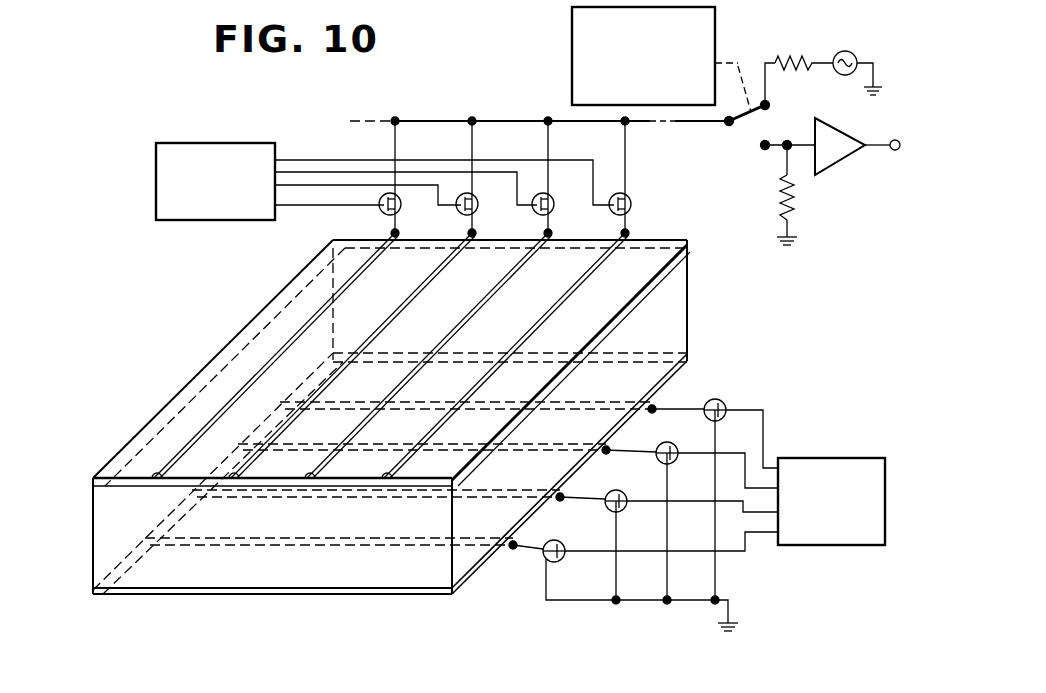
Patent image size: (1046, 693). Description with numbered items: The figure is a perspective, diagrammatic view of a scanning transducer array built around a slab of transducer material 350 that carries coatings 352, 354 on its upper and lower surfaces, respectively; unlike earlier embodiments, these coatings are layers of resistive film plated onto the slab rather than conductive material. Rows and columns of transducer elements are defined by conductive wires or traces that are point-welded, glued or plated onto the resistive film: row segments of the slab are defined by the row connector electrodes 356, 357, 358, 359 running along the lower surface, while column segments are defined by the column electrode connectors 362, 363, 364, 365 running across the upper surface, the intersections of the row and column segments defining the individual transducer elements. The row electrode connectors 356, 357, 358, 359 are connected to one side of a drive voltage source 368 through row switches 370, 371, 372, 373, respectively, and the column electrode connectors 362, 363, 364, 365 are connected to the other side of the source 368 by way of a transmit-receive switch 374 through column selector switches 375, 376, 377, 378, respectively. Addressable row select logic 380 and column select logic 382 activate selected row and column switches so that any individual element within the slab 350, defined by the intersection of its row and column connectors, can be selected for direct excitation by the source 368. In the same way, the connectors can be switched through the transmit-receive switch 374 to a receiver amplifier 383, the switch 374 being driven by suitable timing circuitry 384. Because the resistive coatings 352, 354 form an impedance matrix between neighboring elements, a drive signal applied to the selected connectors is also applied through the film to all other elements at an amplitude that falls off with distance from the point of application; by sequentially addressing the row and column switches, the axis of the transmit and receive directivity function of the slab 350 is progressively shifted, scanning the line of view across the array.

The slab of transducer material 350 is at (105, 528).
The coating 352 is at (93, 480).
The coating 354 is at (98, 592).
The row connector electrode 356 is at (512, 549).
The row connector electrode 357 is at (556, 500).
The row connector electrode 358 is at (603, 453).
The row connector electrode 359 is at (650, 413).
The column electrode connector 362 is at (366, 262).
The column electrode connector 363 is at (445, 262).
The column electrode connector 364 is at (526, 262).
The column electrode connector 365 is at (598, 262).
The drive voltage source 368 is at (848, 51).
The row switch 370 is at (552, 562).
The row switch 371 is at (624, 509).
The row switch 372 is at (663, 465).
The row switch 373 is at (726, 402).
The transmit-receive switch 374 is at (752, 131).
The column selector switch 375 is at (399, 210).
The column selector switch 376 is at (476, 210).
The column selector switch 377 is at (552, 210).
The column selector switch 378 is at (629, 210).
The row select logic 380 is at (810, 458).
The column select logic 382 is at (163, 148).
The receiver amplifier 383 is at (839, 153).
The circuitry 384 is at (712, 22).